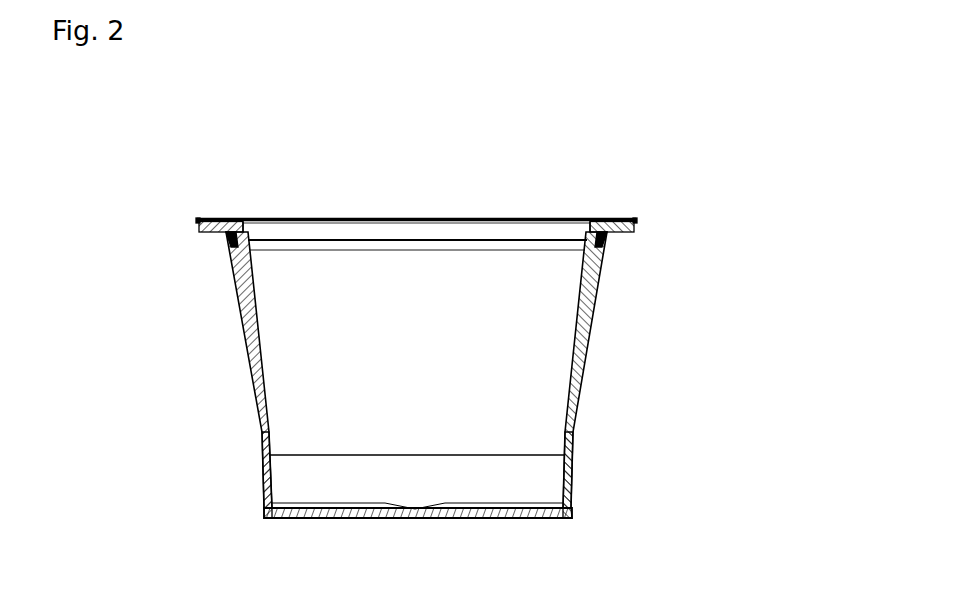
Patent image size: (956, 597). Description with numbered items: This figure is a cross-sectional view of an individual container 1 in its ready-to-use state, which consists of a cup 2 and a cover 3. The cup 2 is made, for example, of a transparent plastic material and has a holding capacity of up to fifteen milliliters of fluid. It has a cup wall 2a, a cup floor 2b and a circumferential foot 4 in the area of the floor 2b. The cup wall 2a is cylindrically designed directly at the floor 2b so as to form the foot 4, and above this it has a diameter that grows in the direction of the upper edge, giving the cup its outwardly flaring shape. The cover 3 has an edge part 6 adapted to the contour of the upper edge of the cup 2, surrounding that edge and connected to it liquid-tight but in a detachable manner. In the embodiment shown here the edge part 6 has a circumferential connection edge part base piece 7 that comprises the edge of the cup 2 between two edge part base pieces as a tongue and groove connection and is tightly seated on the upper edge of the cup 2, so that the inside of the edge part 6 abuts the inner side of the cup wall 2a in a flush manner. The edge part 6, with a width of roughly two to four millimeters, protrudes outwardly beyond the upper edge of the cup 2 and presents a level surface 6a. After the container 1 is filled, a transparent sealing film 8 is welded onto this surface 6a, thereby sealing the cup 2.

The individual container 1 is at (702, 272).
The cup 2 is at (495, 402).
The cup wall 2a is at (589, 336).
The cup floor 2b is at (513, 503).
The cover 3 is at (415, 171).
The circumferential foot 4 is at (572, 517).
The edge part 6 is at (198, 218).
The level surface 6a is at (225, 218).
The edge part base piece 7 is at (233, 238).
The sealing film 8 is at (383, 218).